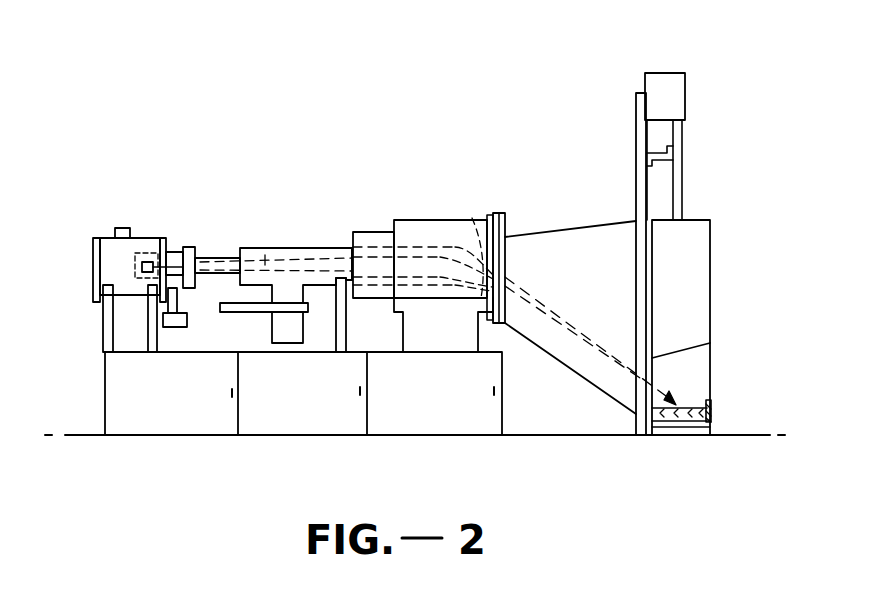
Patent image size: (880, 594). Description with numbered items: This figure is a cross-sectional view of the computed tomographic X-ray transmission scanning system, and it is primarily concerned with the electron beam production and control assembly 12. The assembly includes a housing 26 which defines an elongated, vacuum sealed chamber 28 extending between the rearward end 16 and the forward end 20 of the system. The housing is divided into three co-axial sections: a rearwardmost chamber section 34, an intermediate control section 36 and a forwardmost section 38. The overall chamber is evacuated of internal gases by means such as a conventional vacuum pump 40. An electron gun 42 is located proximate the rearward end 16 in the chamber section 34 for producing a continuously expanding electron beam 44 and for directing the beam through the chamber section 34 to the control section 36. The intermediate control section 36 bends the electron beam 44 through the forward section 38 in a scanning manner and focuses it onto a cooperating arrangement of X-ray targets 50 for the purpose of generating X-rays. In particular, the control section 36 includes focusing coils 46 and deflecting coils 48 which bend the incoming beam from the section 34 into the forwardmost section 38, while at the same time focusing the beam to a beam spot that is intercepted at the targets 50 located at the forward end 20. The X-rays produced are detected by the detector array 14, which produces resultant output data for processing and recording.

The electron beam production and control assembly 12 is at (535, 396).
The detector array 14 is at (748, 73).
The rearward end 16 is at (92, 263).
The forward end 20 is at (712, 408).
The housing 26 is at (305, 256).
The vacuum sealed chamber 28 is at (578, 306).
The rearwardmost chamber section 34 is at (250, 248).
The intermediate control section 36 is at (474, 222).
The forwardmost section 38 is at (633, 372).
The vacuum pump 40 is at (283, 335).
The electron gun 42 is at (148, 258).
The electron beam 44 is at (272, 248).
The focusing coils 46 is at (375, 232).
The deflecting coils 48 is at (432, 228).
The X-ray targets 50 is at (680, 412).